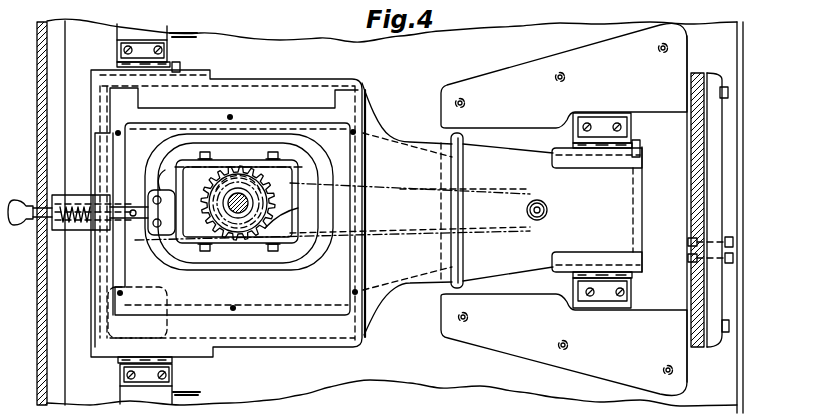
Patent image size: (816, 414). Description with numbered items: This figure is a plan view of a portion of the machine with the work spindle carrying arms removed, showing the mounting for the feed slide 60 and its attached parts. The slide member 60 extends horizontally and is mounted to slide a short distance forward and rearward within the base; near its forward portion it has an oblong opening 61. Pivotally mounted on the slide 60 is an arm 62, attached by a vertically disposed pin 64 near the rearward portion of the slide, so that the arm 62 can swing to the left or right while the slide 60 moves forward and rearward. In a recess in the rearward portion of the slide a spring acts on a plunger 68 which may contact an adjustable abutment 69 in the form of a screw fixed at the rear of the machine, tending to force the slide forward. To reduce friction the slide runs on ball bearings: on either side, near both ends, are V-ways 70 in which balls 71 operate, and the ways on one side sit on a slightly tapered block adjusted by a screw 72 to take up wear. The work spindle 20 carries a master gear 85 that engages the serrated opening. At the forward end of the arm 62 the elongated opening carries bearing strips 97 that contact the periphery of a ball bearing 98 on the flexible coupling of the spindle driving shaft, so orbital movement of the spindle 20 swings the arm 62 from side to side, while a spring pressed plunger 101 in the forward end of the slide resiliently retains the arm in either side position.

The work spindle 20 is at (243, 214).
The slide member 60 is at (420, 267).
The oblong opening 61 is at (209, 140).
The arm 62 is at (257, 153).
The pin 64 is at (548, 211).
The plunger 68 is at (687, 210).
The adjustable abutment 69 is at (727, 240).
The V-ways 70 is at (118, 62).
The balls 71 is at (153, 58).
The screw 72 is at (178, 65).
The master gear 85 is at (212, 214).
The bearing strips 97 is at (298, 208).
The ball bearing 98 is at (188, 160).
The spring pressed plunger 101 is at (153, 188).